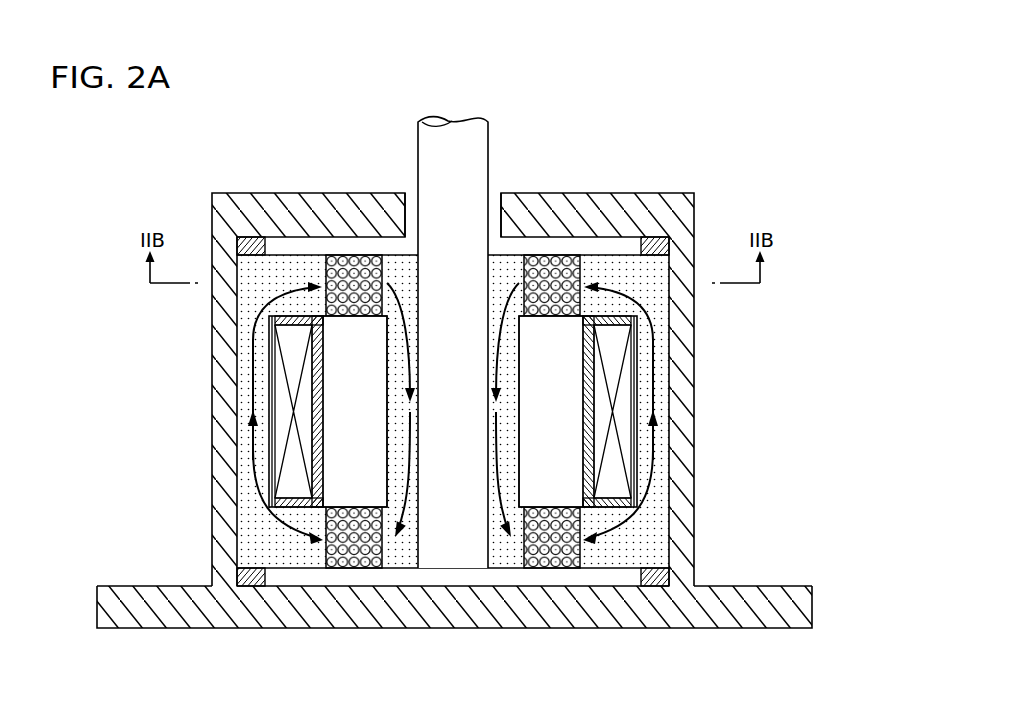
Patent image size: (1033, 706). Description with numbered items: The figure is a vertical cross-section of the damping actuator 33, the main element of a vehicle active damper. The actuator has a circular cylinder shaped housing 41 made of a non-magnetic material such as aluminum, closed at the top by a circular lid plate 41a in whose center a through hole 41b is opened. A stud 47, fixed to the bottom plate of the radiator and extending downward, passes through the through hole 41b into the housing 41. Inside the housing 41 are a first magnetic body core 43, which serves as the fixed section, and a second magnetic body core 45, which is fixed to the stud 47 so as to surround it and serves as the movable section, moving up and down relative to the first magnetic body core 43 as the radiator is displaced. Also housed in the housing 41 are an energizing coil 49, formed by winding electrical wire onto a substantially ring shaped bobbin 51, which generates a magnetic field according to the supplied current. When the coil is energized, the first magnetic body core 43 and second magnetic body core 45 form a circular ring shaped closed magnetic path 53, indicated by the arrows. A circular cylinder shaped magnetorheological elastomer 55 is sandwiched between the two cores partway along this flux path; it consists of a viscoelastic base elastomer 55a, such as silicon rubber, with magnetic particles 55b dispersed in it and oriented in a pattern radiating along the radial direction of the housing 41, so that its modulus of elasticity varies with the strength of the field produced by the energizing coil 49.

The damping actuator 33 is at (677, 150).
The housing 41 is at (250, 213).
The lid plate 41a is at (337, 216).
The through hole 41b is at (497, 216).
The first magnetic body core 43 is at (258, 270).
The second magnetic body core 45 is at (412, 310).
The stud 47 is at (452, 160).
The energizing coil 49 is at (618, 418).
The bobbin 51 is at (585, 538).
The closed magnetic path 53 is at (283, 540).
The magnetorheological elastomer 55 is at (459, 479).
The base elastomer 55a is at (533, 563).
The magnetic particles 55b is at (560, 563).